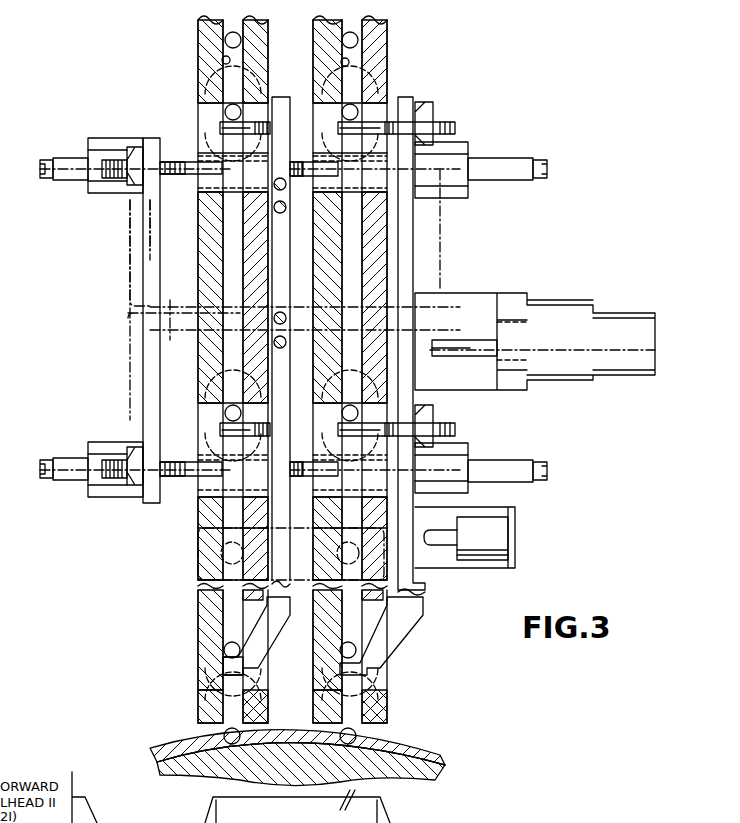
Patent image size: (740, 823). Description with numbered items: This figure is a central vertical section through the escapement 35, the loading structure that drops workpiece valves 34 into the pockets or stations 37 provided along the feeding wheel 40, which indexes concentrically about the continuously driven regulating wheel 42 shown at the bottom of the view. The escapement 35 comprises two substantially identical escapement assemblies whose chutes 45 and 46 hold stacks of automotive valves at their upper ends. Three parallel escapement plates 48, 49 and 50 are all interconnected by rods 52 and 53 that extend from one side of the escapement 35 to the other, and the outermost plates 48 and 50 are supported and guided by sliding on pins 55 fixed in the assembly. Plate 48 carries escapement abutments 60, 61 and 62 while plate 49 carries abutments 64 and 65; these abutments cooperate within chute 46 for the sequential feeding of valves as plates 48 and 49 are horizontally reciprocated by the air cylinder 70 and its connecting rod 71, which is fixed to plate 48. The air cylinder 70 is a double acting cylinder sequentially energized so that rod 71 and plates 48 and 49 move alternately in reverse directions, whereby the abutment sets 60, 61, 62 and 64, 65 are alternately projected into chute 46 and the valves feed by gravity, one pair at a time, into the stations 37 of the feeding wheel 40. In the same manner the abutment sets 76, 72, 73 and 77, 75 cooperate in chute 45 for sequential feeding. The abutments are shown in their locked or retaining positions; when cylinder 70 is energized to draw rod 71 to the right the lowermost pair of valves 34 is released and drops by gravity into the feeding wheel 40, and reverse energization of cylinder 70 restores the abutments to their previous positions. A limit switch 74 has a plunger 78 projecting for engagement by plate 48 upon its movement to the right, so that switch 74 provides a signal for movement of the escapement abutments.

The workpiece valves 34 is at (232, 40).
The escapement 35 is at (118, 311).
The pockets or stations 37 is at (215, 745).
The feeding wheel 40 is at (435, 755).
The regulating wheel 42 is at (350, 786).
The chute 45 is at (225, 60).
The chute 46 is at (348, 62).
The escapement plate 48 is at (425, 565).
The escapement plate 49 is at (285, 598).
The escapement plate 50 is at (152, 503).
The rod 52 is at (130, 262).
The rod 53 is at (172, 320).
The pins 55 is at (62, 162).
The escapement abutment 60 is at (340, 128).
The escapement abutment 61 is at (340, 430).
The escapement abutment 62 is at (352, 672).
The escapement abutment 64 is at (322, 178).
The escapement abutment 65 is at (325, 478).
The air cylinder 70 is at (565, 312).
The connecting rod 71 is at (462, 340).
The escapement abutment 72 is at (228, 430).
The escapement abutment 73 is at (230, 670).
The limit switch 74 is at (470, 545).
The escapement abutment 75 is at (205, 478).
The escapement abutment 76 is at (222, 128).
The escapement abutment 77 is at (188, 165).
The plunger 78 is at (440, 545).